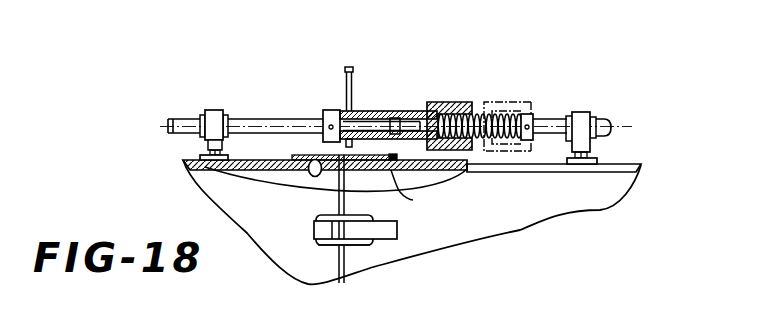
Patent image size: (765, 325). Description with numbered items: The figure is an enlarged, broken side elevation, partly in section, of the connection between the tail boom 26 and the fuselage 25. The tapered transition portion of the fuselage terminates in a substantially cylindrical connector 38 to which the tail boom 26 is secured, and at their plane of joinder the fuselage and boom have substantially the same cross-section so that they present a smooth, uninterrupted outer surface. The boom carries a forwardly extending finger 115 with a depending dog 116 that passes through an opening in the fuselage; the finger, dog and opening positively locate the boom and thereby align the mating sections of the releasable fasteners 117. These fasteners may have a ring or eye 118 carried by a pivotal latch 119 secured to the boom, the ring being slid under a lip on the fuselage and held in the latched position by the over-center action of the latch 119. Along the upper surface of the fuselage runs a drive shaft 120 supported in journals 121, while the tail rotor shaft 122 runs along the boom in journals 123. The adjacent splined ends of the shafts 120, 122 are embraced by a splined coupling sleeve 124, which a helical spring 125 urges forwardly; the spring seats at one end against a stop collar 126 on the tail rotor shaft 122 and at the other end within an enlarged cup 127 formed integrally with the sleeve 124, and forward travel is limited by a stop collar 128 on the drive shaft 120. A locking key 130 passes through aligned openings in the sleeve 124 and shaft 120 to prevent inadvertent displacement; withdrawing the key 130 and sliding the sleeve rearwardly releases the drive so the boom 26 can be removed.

The fuselage 25 is at (293, 274).
The tail boom 26 is at (548, 212).
The connector 38 is at (215, 192).
The finger 115 is at (415, 191).
The dog 116 is at (316, 177).
The releasable fasteners 117 is at (359, 251).
The ring 118 is at (328, 247).
The pivotal latch 119 is at (397, 230).
The drive shaft 120 is at (265, 119).
The journals 121 is at (216, 110).
The tail rotor shaft 122 is at (598, 119).
The journals 123 is at (577, 112).
The coupling sleeve 124 is at (403, 111).
The helical spring 125 is at (466, 116).
The stop collar 126 is at (548, 114).
The cup 127 is at (443, 102).
The stop collar 128 is at (330, 110).
The locking key 130 is at (351, 111).